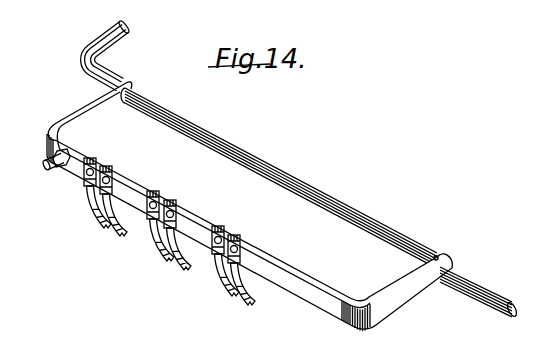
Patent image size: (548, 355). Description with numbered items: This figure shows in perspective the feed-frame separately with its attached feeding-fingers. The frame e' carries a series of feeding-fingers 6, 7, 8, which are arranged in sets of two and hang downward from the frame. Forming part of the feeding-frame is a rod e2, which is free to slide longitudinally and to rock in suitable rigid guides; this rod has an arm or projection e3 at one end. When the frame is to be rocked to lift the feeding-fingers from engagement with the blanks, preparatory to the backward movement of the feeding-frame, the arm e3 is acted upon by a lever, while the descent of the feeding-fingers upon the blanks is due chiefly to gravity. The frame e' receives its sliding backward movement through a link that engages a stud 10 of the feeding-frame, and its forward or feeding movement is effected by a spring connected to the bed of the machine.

The arm or projection e3 is at (119, 26).
The feeding-frame e' is at (249, 206).
The rod e2 is at (319, 203).
The stud 10 is at (46, 168).
The feeding-fingers 8 is at (99, 213).
The feeding-fingers 7 is at (158, 248).
The feeding-fingers 6 is at (226, 284).